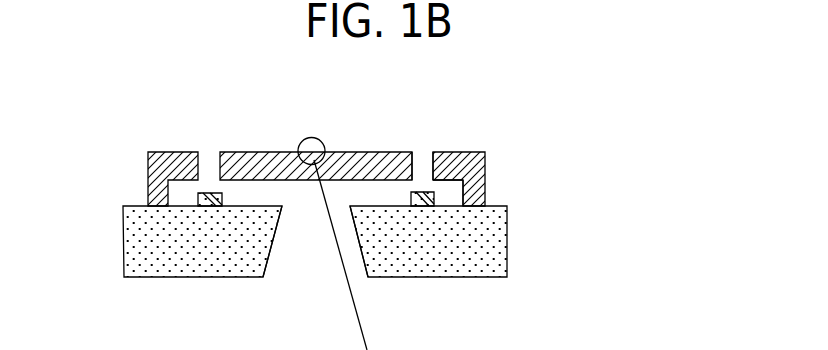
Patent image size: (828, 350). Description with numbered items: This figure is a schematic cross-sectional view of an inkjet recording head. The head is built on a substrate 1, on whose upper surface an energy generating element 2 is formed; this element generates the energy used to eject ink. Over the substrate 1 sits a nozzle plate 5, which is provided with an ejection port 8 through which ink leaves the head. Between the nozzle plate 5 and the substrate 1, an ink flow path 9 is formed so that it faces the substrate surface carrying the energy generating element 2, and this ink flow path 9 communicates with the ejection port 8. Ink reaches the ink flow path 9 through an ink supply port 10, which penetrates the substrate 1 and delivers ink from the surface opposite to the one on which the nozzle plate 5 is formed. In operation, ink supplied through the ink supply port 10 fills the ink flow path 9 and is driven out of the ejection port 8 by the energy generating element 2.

The substrate 1 is at (472, 242).
The energy generating element 2 is at (434, 197).
The nozzle plate 5 is at (470, 157).
The ejection port 8 is at (421, 156).
The ink flow path 9 is at (443, 190).
The ink supply port 10 is at (300, 261).